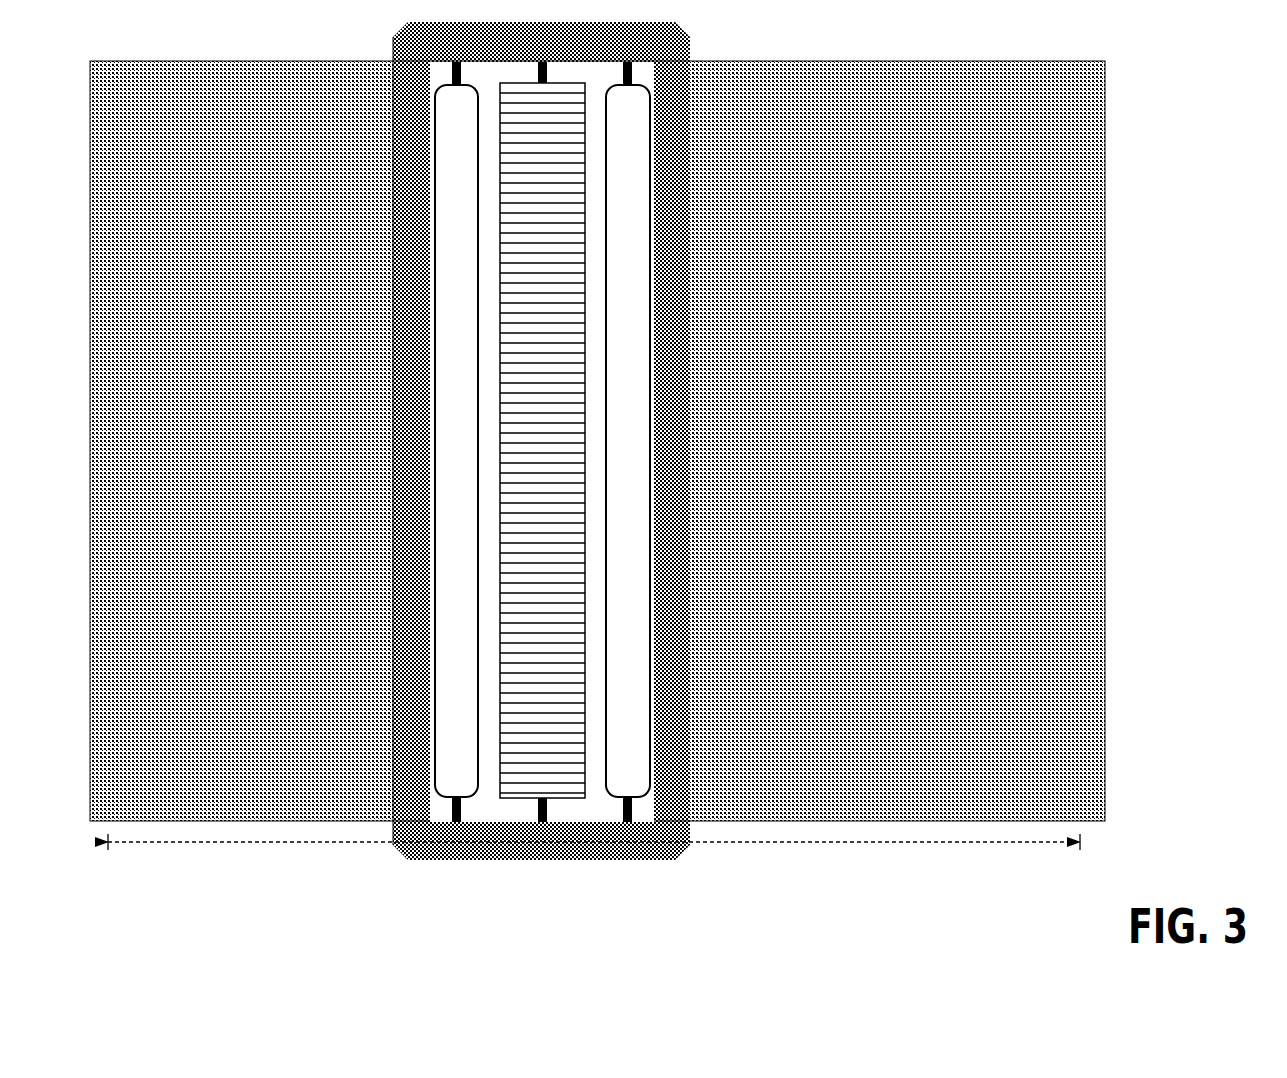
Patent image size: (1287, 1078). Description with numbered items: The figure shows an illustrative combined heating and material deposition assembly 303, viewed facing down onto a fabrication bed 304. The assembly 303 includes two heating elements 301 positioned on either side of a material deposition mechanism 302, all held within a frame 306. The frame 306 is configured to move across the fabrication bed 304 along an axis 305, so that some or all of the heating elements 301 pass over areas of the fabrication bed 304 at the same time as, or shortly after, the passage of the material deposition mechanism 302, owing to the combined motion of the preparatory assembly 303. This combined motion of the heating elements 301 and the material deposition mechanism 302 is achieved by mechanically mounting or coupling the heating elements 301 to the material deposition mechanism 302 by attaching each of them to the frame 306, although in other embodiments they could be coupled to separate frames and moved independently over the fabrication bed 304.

The heating elements 301 is at (628, 190).
The material deposition mechanism 302 is at (562, 778).
The combined heating and material deposition assembly 303 is at (695, 410).
The fabrication bed 304 is at (907, 758).
The axis 305 is at (594, 856).
The frame 306 is at (413, 625).